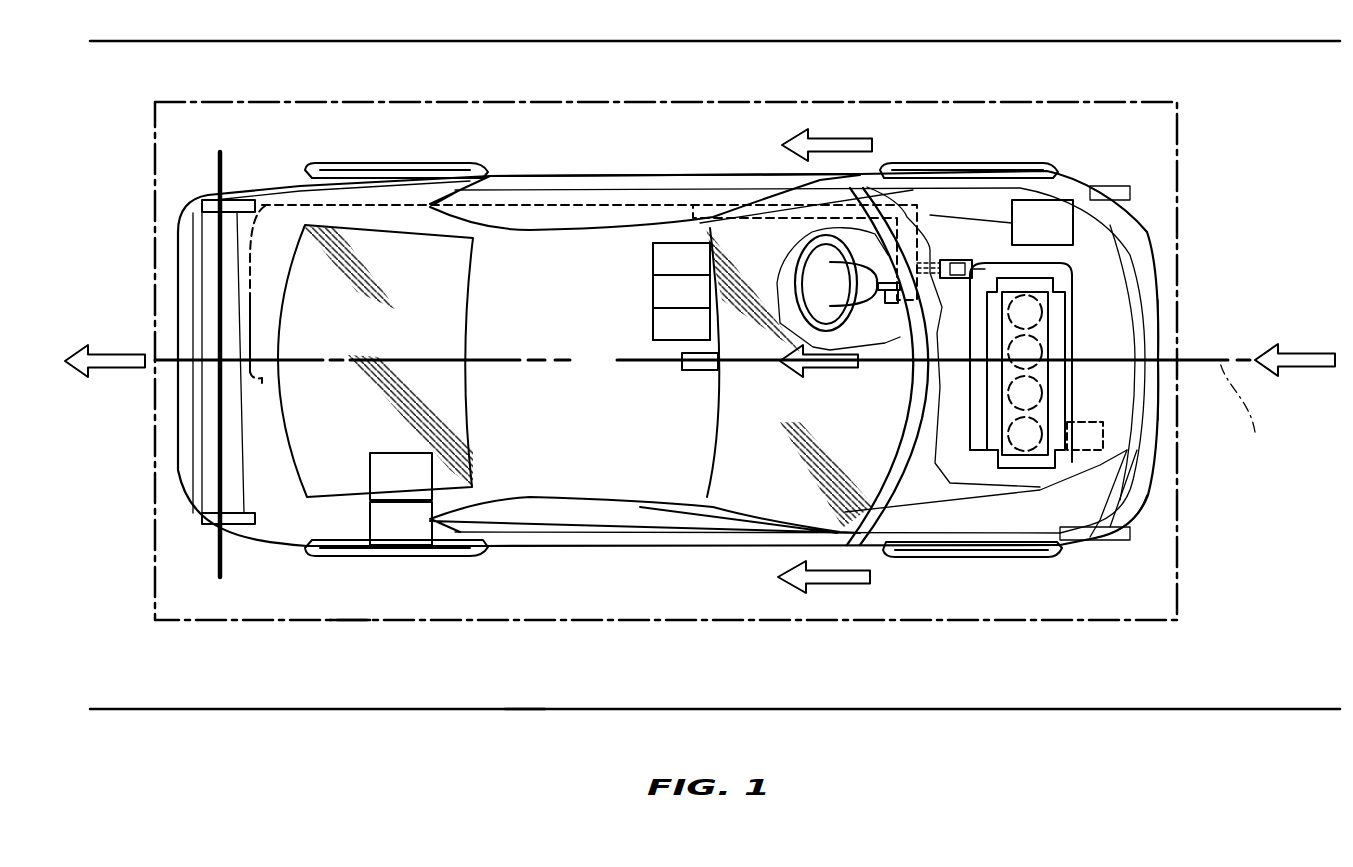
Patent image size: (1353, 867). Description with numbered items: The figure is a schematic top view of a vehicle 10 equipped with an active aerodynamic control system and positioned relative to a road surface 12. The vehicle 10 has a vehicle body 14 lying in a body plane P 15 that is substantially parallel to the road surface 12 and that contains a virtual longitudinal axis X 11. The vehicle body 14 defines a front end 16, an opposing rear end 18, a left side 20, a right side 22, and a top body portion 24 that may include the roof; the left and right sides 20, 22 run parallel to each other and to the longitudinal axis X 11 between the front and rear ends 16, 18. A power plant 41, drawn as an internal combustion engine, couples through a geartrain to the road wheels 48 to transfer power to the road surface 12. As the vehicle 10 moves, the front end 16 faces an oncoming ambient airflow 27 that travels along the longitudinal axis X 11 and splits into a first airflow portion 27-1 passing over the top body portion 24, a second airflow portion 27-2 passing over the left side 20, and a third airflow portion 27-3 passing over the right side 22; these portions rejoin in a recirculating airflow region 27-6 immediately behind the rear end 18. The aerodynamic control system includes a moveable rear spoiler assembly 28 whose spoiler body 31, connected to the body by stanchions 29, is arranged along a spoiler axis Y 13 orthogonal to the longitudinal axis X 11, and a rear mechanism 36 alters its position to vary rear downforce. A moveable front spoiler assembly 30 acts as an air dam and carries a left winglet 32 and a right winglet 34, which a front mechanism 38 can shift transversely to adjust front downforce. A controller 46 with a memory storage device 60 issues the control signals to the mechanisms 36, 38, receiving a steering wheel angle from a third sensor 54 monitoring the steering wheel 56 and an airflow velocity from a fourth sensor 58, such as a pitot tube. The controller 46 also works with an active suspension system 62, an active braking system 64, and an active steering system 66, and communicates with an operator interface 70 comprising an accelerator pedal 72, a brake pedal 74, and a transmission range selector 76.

The vehicle 10 is at (1240, 575).
The longitudinal axis X 11 is at (1246, 407).
The road surface 12 is at (525, 686).
The spoiler axis Y 13 is at (225, 183).
The vehicle body 14 is at (605, 268).
The body plane P 15 is at (348, 622).
The front end 16 is at (1173, 283).
The rear end 18 is at (172, 287).
The left side 20 is at (693, 185).
The right side 22 is at (660, 550).
The top body portion 24 is at (702, 360).
The ambient airflow 27 is at (1300, 348).
The first airflow portion 27-1 is at (825, 372).
The second airflow portion 27-2 is at (830, 132).
The third airflow portion 27-3 is at (833, 592).
The recirculating airflow region 27-6 is at (115, 378).
The rear spoiler assembly 28 is at (255, 465).
The stanchions 29 is at (205, 520).
The front spoiler assembly 30 is at (1146, 505).
The spoiler body 31 is at (213, 472).
The left winglet 32 is at (1135, 190).
The right winglet 34 is at (1130, 537).
The rear mechanism 36 is at (262, 385).
The front mechanism 38 is at (1103, 437).
The power plant 41 is at (1089, 300).
The controller 46 is at (938, 258).
The road wheels 48 is at (357, 163).
The third sensor 54 is at (892, 305).
The steering wheel 56 is at (778, 280).
The fourth sensor 58 is at (698, 374).
The memory storage device 60 is at (975, 275).
The active suspension system 62 is at (1001, 222).
The active braking system 64 is at (401, 476).
The active steering system 66 is at (401, 523).
The operator interface 70 is at (652, 290).
The accelerator pedal 72 is at (681, 259).
The brake pedal 74 is at (681, 291).
The transmission range selector 76 is at (681, 324).